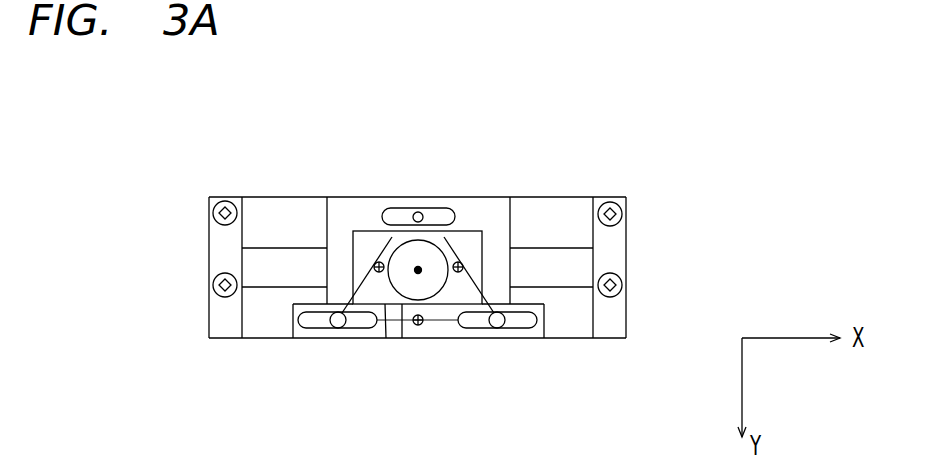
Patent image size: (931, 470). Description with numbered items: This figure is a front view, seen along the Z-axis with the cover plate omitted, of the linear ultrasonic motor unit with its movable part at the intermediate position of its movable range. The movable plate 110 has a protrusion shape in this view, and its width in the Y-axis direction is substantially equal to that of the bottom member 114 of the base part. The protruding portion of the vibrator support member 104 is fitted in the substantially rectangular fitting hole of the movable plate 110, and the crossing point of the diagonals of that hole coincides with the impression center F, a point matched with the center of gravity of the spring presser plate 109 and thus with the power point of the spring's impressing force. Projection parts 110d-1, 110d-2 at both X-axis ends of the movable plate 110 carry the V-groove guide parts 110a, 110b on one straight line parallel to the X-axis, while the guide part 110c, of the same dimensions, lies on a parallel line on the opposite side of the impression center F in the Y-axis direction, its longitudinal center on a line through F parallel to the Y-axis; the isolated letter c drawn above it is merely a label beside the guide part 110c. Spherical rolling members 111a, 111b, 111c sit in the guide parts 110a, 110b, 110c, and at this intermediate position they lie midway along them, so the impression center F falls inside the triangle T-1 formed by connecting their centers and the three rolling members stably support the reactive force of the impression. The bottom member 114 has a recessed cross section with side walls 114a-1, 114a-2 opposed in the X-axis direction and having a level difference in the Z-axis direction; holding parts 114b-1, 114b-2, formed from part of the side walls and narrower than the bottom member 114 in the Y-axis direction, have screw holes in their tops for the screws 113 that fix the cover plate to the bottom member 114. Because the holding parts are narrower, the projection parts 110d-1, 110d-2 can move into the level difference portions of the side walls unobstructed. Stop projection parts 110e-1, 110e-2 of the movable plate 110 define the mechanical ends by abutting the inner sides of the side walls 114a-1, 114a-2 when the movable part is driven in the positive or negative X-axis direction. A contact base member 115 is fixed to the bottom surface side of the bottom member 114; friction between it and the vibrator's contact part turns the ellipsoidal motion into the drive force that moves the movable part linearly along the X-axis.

The vibrator support member 104 is at (385, 304).
The spring presser plate 109 is at (418, 270).
The movable plate 110 is at (353, 197).
The guide part 110a is at (522, 338).
The guide part 110b is at (308, 337).
The guide part 110c is at (408, 209).
The projection part 110d-1 is at (540, 307).
The projection part 110d-2 is at (297, 320).
The stop projection part 110e-1 is at (511, 266).
The stop projection part 110e-2 is at (327, 277).
The rolling member 111a is at (497, 330).
The rolling member 111b is at (338, 328).
The rolling member 111c is at (418, 212).
The screws 113 is at (628, 203).
The bottom member 114 is at (628, 322).
The side wall 114a-1 is at (620, 306).
The side wall 114a-2 is at (210, 301).
The holding part 114b-1 is at (576, 247).
The holding part 114b-2 is at (248, 256).
The contact base member 115 is at (263, 286).
The triangle T-1 is at (458, 247).
The impression center F is at (404, 338).
The center c is at (418, 219).